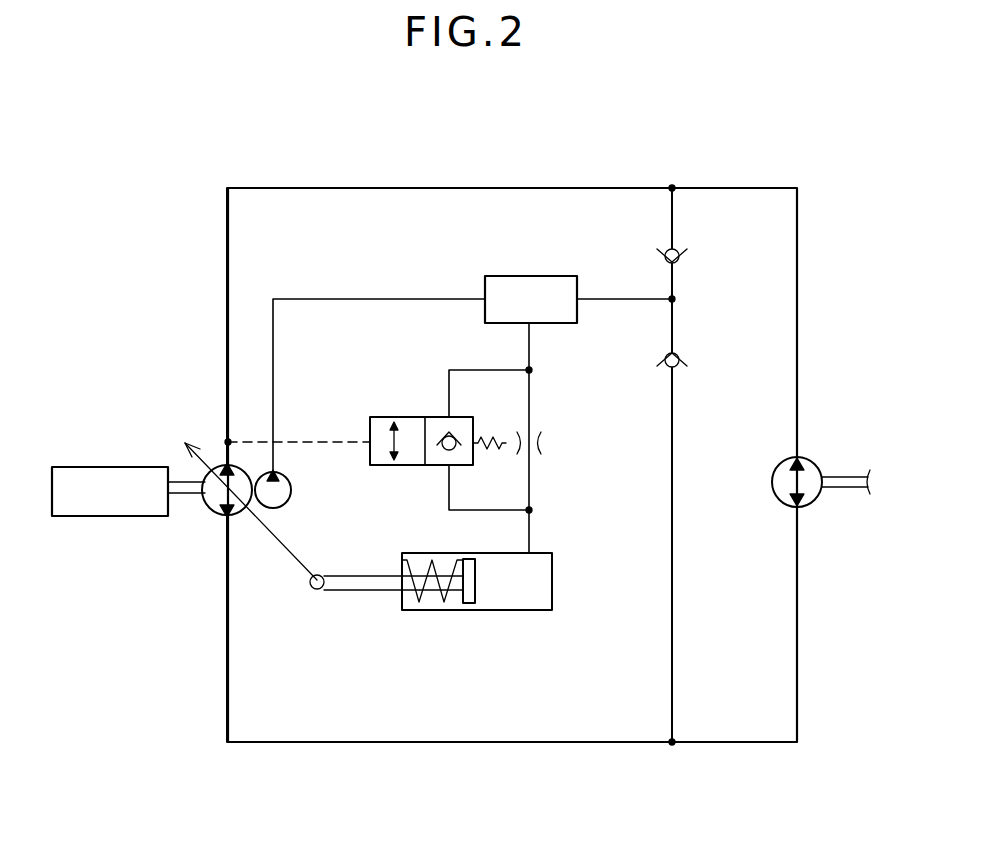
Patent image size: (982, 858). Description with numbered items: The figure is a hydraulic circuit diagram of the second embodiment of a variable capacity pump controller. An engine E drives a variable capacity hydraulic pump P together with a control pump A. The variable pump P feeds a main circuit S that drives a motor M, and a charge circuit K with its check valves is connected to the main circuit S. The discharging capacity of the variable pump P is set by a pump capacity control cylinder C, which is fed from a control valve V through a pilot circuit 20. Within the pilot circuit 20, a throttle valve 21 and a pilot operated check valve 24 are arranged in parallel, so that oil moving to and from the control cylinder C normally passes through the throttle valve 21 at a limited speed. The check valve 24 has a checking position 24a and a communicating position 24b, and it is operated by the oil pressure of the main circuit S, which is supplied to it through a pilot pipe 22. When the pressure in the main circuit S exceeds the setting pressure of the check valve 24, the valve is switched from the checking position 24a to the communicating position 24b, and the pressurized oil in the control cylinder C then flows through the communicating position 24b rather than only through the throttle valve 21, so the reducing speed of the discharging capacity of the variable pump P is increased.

The main circuit S is at (323, 188).
The engine E is at (128, 467).
The variable capacity hydraulic pump P is at (215, 512).
The control pump A is at (283, 508).
The pilot pipe 22 is at (301, 442).
The control valve V is at (536, 276).
The charge circuit K is at (682, 303).
The pilot circuit 20 is at (532, 357).
The pilot operated check valve 24 is at (410, 417).
The checking position 24a is at (440, 465).
The communicating position 24b is at (383, 465).
The throttle valve 21 is at (545, 445).
The pump capacity control cylinder C is at (489, 610).
The motor M is at (812, 460).